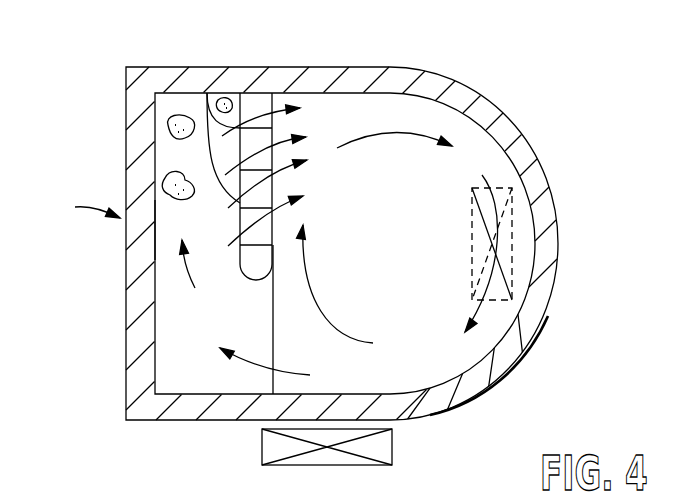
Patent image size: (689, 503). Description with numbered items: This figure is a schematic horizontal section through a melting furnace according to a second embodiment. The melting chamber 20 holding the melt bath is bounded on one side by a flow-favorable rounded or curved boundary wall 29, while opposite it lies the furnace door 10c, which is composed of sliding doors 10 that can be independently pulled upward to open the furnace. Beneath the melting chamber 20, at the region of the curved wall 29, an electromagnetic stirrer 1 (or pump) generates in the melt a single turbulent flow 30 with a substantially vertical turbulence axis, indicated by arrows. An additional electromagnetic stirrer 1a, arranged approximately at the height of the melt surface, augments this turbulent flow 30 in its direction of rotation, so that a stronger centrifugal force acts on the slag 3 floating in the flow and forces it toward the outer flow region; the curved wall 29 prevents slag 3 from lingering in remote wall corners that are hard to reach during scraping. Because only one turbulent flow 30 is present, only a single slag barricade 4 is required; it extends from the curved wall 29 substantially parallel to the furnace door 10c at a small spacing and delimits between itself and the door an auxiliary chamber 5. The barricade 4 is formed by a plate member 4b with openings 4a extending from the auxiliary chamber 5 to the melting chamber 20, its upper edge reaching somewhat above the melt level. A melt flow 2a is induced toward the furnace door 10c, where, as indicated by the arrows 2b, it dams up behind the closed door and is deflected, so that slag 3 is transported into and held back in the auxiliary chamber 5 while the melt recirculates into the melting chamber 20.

The electromagnetic stirrer 1 is at (520, 333).
The additional electromagnetic stirrer 1a is at (392, 447).
The melt flow 2a is at (322, 360).
The arrows indicating deflected melt flow 2b is at (190, 268).
The slag 3 is at (173, 117).
The slag barricade 4 is at (252, 100).
The openings 4a is at (207, 93).
The plate member 4b is at (280, 97).
The auxiliary chamber 5 is at (167, 223).
The sliding door 10 is at (138, 165).
The furnace door 10c is at (76, 201).
The melting chamber 20 is at (475, 157).
The curved boundary wall 29 is at (540, 303).
The turbulent flow 30 is at (388, 130).